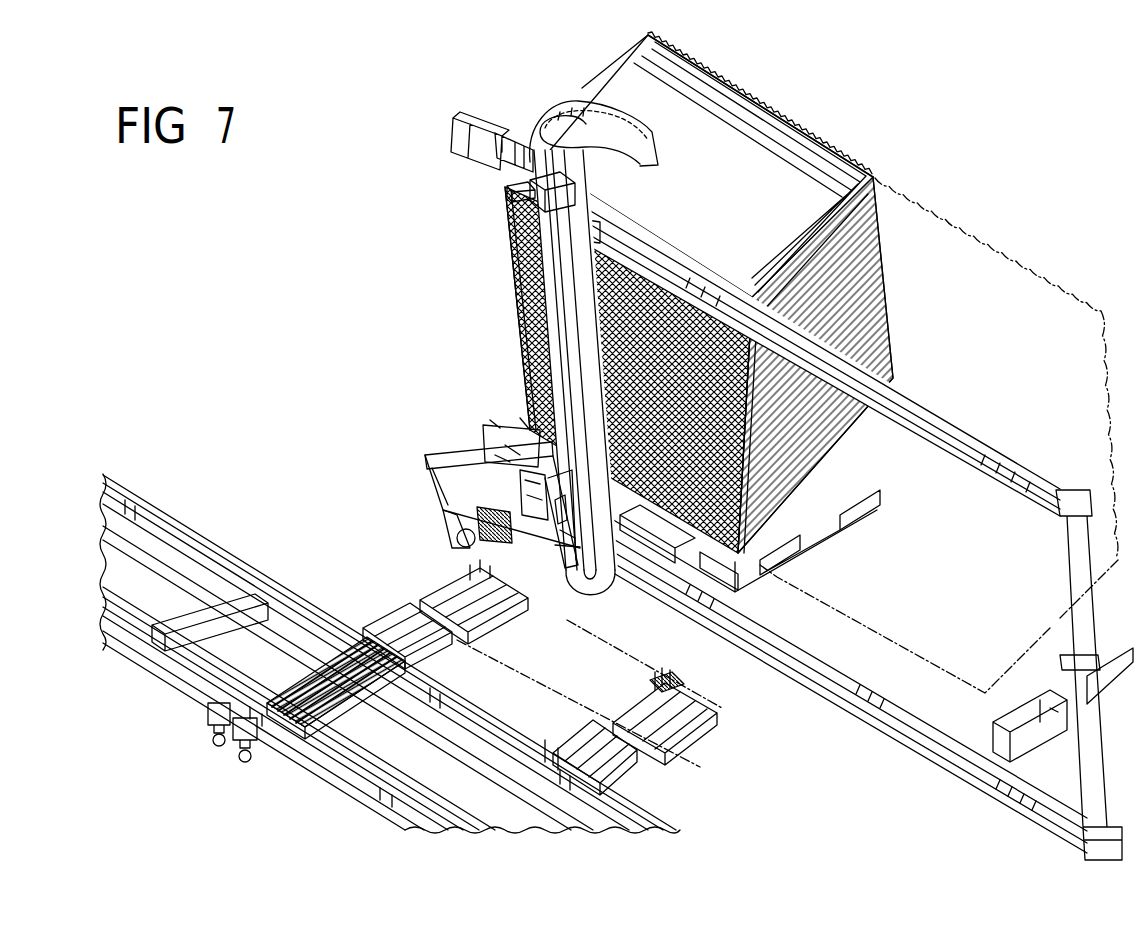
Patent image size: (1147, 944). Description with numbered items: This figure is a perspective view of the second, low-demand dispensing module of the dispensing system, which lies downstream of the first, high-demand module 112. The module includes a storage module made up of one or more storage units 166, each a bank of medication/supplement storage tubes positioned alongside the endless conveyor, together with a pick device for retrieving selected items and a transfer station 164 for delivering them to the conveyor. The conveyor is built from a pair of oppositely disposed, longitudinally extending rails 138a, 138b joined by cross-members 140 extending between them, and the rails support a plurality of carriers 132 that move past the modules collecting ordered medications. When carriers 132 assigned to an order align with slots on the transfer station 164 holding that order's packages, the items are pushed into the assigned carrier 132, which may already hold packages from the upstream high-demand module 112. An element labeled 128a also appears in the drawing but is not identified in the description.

The high-demand module 112 is at (480, 522).
The guide frame 128a is at (604, 581).
The carriers 132 is at (362, 690).
The longitudinally extending rail 138a is at (172, 658).
The longitudinally extending rail 138b is at (190, 568).
The cross-members 140 is at (228, 627).
The transfer station 164 is at (378, 550).
The storage unit 166 is at (776, 101).